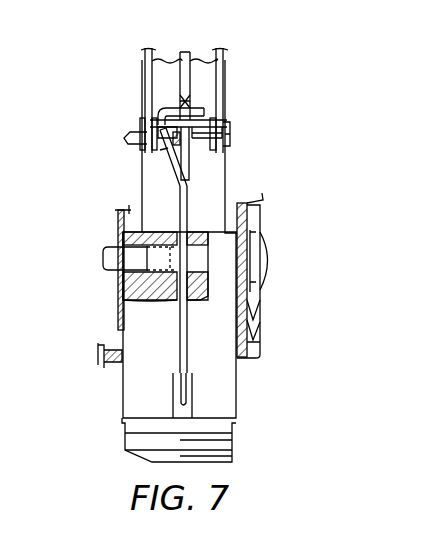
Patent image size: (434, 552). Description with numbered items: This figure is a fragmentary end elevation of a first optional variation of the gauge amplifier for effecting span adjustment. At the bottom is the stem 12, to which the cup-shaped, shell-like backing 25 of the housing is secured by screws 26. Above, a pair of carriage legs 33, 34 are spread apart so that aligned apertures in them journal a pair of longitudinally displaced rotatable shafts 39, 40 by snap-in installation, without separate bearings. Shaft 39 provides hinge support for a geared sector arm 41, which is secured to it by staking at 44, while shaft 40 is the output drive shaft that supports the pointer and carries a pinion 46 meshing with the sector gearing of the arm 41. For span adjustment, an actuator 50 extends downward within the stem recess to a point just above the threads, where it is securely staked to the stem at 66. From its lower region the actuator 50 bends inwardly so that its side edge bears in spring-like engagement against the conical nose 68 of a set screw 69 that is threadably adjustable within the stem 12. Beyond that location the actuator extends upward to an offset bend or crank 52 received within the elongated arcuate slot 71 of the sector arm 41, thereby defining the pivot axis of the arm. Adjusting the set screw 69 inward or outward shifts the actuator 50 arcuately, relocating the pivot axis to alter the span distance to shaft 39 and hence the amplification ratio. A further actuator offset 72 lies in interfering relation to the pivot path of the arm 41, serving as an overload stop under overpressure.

The stem 12 is at (138, 383).
The backing 25 is at (253, 360).
The screws 26 is at (265, 252).
The carriage leg 33 is at (145, 64).
The carriage leg 34 is at (226, 69).
The shaft 39 is at (206, 127).
The output drive shaft 40 is at (128, 140).
The sector arm 41 is at (185, 52).
The staking 44 is at (190, 150).
The pinion 46 is at (172, 150).
The actuator 50 is at (188, 215).
The crank 52 is at (205, 111).
The staked location 66 is at (184, 402).
The conical nose 68 is at (170, 300).
The set screw 69 is at (115, 258).
The slot 71 is at (182, 98).
The actuator offset 72 is at (171, 176).